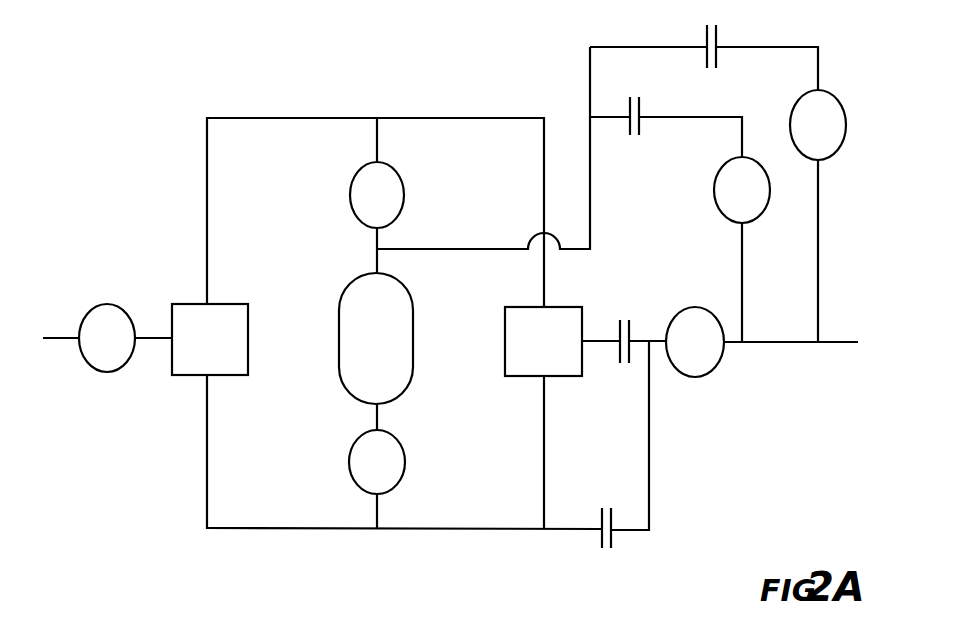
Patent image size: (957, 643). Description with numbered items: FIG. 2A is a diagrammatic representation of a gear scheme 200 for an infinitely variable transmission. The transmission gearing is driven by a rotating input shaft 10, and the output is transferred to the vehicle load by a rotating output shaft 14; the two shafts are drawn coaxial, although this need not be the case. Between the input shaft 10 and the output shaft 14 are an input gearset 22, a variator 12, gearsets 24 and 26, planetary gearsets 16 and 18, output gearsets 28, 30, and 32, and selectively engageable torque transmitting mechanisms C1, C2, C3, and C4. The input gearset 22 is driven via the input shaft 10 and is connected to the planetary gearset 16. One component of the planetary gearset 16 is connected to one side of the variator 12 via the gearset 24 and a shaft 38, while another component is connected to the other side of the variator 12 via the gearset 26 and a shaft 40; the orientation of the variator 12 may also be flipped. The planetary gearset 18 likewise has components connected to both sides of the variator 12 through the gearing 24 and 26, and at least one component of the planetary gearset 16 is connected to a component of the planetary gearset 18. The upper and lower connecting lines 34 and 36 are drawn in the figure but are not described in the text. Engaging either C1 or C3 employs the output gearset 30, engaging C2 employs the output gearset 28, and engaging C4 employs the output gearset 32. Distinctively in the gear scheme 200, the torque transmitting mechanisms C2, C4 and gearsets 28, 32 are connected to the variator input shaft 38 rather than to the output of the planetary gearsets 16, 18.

The gear scheme 200 is at (127, 70).
The input shaft 10 is at (62, 338).
The input gearset 22 is at (95, 350).
The planetary gearset 16 is at (198, 352).
The upper conductor 34 is at (300, 118).
The gearset 24 is at (365, 207).
The shaft 38 is at (404, 238).
The variator 12 is at (364, 350).
The shaft 40 is at (378, 418).
The gearset 26 is at (365, 474).
The lower conductor 36 is at (277, 530).
The planetary gearset 18 is at (531, 353).
The torque transmitting mechanism C1 is at (624, 329).
The output gearset 30 is at (683, 354).
The torque transmitting mechanism C3 is at (623, 463).
The torque transmitting mechanism C2 is at (666, 132).
The output gearset 28 is at (730, 202).
The torque transmitting mechanism C4 is at (704, 61).
The output gearset 32 is at (806, 137).
The output shaft 14 is at (842, 342).